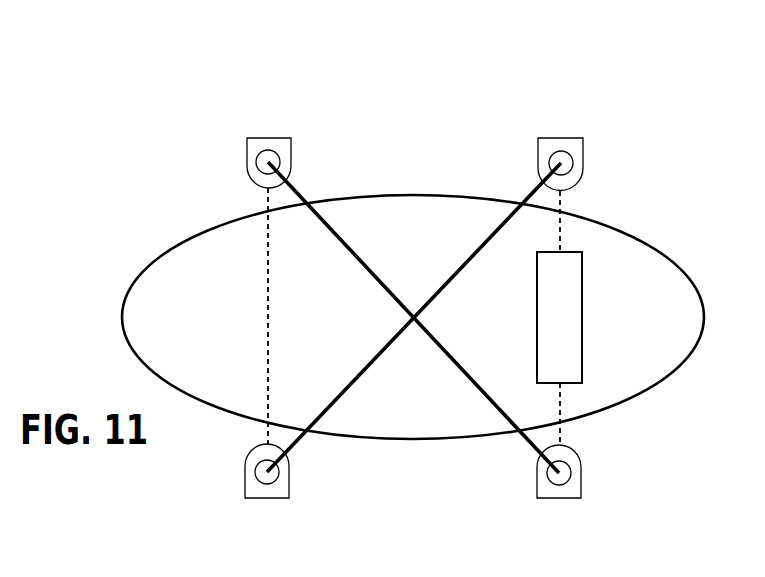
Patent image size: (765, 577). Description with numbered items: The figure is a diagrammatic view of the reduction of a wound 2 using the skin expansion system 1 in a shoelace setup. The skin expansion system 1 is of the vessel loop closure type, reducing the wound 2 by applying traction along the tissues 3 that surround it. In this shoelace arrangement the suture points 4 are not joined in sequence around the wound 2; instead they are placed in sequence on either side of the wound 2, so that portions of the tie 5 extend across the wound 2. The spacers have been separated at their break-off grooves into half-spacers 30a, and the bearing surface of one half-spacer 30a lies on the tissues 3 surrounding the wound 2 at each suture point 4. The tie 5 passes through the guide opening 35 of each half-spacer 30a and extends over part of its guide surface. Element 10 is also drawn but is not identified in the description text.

The skin expansion system 1 is at (413, 291).
The wound 2 is at (415, 366).
The tissues 3 is at (492, 460).
The suture points 4 is at (378, 318).
The tie 5 is at (490, 232).
The tensioner 10 is at (585, 373).
The half-spacer 30a is at (246, 146).
The guide opening 35 is at (259, 476).